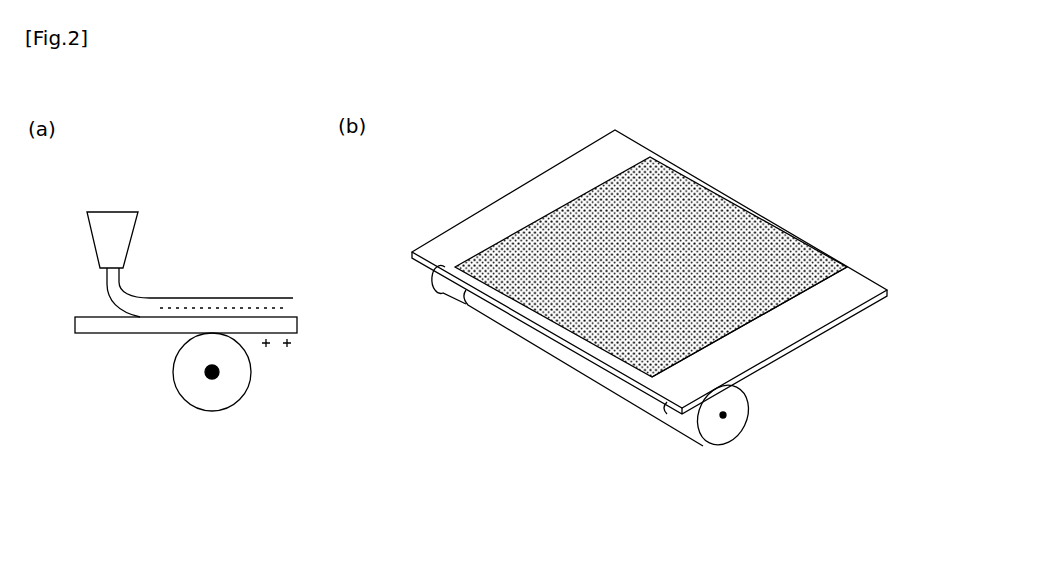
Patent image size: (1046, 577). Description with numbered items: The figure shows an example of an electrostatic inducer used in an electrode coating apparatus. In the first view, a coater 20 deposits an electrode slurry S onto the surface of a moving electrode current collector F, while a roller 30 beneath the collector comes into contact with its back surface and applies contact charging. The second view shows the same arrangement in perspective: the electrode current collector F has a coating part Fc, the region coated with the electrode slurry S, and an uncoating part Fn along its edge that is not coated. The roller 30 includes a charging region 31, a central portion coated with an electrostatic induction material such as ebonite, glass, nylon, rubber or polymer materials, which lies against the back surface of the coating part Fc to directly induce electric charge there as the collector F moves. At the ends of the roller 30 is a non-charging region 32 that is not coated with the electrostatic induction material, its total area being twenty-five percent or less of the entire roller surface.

The coater 20 is at (122, 237).
The electrode slurry S is at (255, 305).
The electrode current collector F is at (100, 333).
The roller 30 is at (217, 392).
The charging region 31 is at (570, 360).
The non-charging region 32 is at (442, 290).
The coating part Fc is at (678, 188).
The uncoating part Fn is at (803, 322).